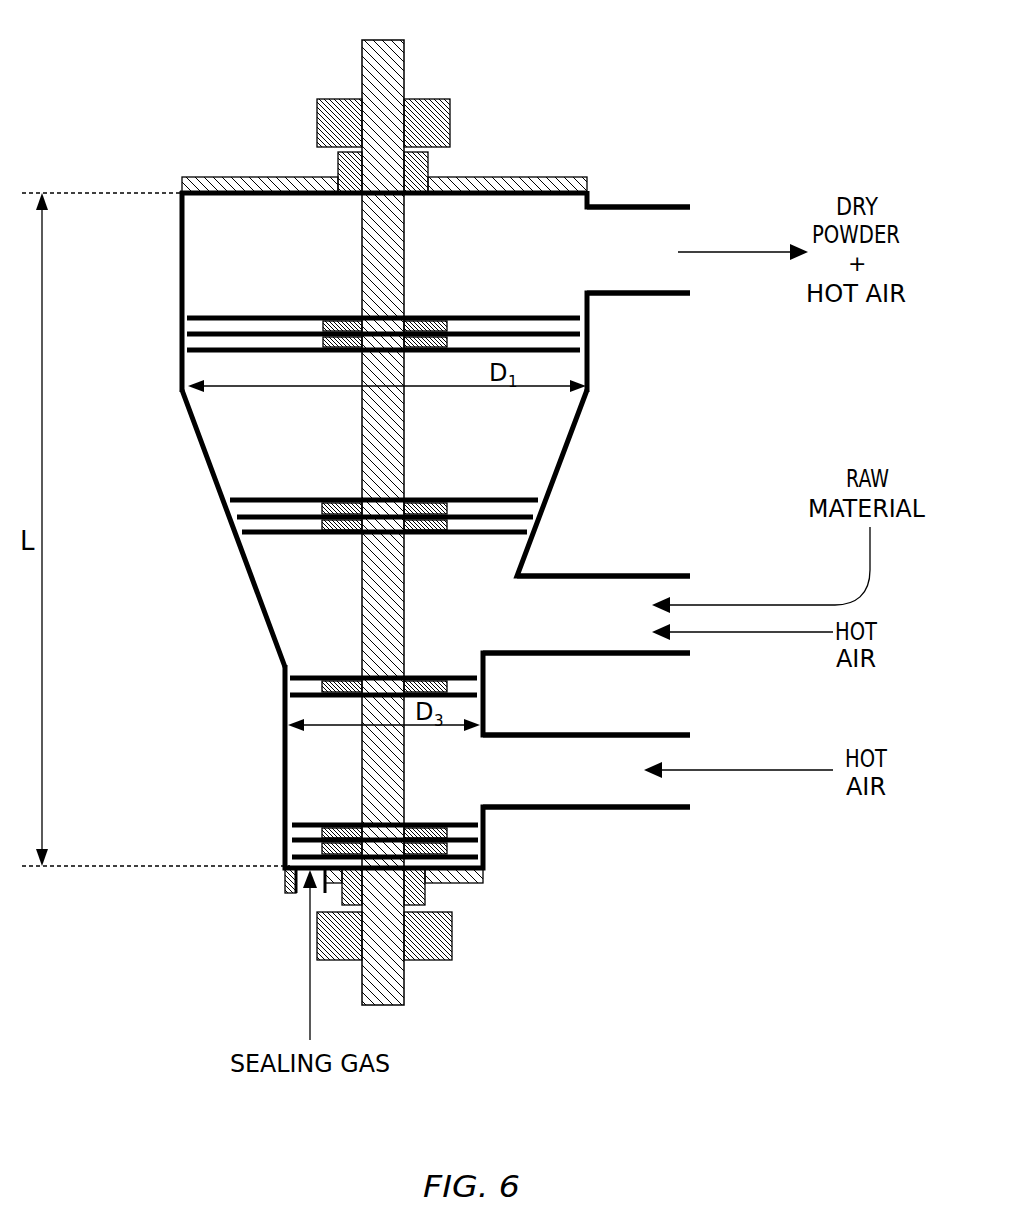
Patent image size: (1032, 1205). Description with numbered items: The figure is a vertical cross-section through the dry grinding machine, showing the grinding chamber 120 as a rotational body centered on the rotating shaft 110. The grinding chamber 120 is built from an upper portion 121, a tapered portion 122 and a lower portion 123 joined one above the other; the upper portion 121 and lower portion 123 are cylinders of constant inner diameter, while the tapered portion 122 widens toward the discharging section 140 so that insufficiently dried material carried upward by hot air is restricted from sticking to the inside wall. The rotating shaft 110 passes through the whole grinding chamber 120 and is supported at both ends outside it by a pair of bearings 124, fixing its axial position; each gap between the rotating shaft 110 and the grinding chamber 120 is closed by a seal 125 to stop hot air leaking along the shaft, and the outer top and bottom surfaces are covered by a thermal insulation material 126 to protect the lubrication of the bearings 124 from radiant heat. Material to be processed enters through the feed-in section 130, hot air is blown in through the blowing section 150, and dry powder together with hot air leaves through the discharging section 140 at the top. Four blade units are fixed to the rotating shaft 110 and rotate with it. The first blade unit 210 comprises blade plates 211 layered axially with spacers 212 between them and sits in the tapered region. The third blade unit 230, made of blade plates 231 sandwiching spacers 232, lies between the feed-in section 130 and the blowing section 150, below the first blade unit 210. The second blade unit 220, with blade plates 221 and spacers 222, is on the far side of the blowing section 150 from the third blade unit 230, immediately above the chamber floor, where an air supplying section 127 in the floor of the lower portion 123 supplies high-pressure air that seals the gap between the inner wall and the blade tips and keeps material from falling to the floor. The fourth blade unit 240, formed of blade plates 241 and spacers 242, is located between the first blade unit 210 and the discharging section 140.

The rotating shaft 110 is at (405, 66).
The grinding chamber 120 is at (385, 530).
The upper portion 121 is at (180, 265).
The tapered portion 122 is at (203, 455).
The lower portion 123 is at (285, 775).
The bearing 124 is at (317, 122).
The seal 125 is at (338, 162).
The thermal insulation material 126 is at (281, 177).
The air supplying section 127 is at (286, 888).
The feed-in section 130 is at (600, 576).
The discharging section 140 is at (633, 207).
The blowing section 150 is at (596, 733).
The first blade unit 210 is at (385, 469).
The blade plate 211 is at (541, 500).
The spacer 212 is at (447, 510).
The second blade unit 220 is at (396, 795).
The blade plate 221 is at (463, 825).
The spacer 222 is at (450, 832).
The third blade unit 230 is at (389, 640).
The blade plate 231 is at (464, 678).
The spacer 232 is at (448, 684).
The fourth blade unit 240 is at (383, 288).
The blade plate 241 is at (548, 317).
The spacer 242 is at (450, 332).